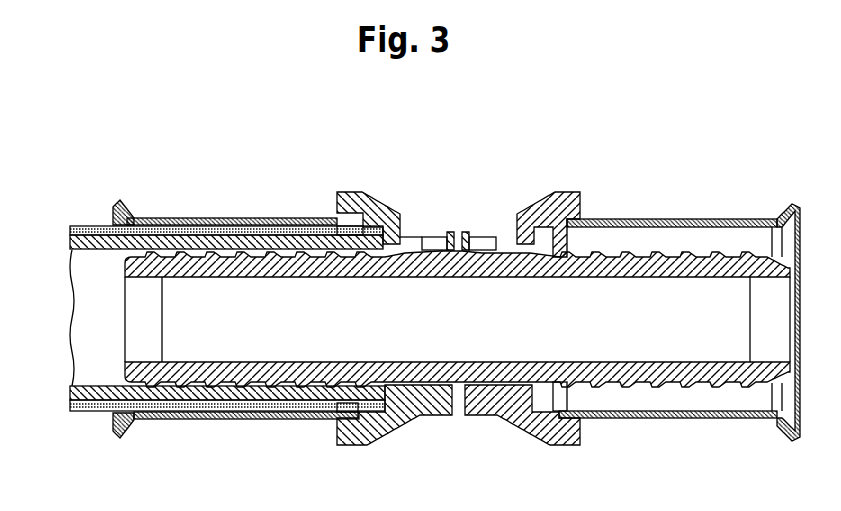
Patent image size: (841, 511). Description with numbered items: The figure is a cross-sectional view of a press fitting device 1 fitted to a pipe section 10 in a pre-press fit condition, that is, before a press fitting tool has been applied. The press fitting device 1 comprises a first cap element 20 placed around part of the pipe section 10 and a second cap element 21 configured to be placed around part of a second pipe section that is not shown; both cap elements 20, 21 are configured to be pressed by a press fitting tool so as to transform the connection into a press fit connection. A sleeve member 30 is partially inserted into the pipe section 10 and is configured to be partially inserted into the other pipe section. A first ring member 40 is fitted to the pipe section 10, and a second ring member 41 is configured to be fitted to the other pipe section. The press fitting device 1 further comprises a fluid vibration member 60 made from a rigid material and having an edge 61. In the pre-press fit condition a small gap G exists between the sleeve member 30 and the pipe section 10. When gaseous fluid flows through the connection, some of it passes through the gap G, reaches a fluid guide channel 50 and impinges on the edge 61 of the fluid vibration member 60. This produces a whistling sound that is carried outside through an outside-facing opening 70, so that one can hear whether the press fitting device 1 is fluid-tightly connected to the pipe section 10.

The press fitting device 1 is at (650, 140).
The pipe section 10 is at (103, 412).
The first cap element 20 is at (207, 218).
The second cap element 21 is at (734, 218).
The sleeve member 30 is at (648, 384).
The first ring member 40 is at (374, 192).
The second ring member 41 is at (548, 190).
The fluid guide channel 50 is at (403, 238).
The fluid vibration member 60 is at (452, 231).
The edge 61 is at (425, 222).
The outside-facing opening 70 is at (470, 232).
The gap G is at (318, 216).